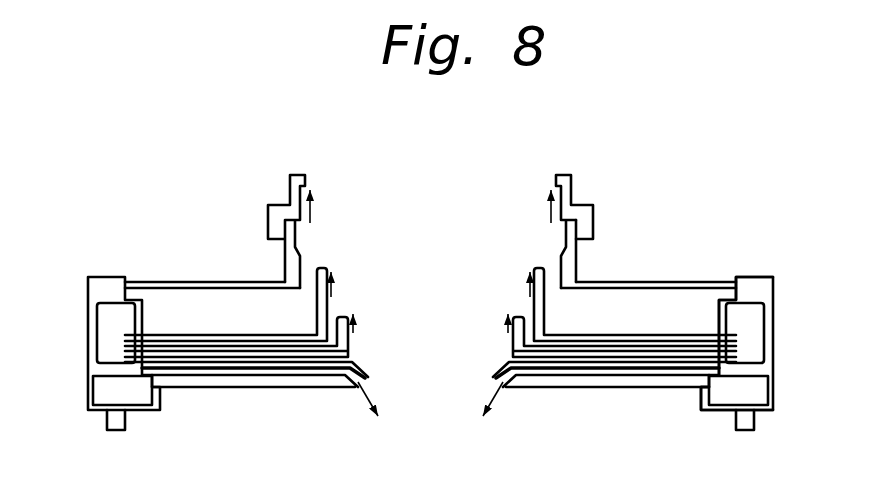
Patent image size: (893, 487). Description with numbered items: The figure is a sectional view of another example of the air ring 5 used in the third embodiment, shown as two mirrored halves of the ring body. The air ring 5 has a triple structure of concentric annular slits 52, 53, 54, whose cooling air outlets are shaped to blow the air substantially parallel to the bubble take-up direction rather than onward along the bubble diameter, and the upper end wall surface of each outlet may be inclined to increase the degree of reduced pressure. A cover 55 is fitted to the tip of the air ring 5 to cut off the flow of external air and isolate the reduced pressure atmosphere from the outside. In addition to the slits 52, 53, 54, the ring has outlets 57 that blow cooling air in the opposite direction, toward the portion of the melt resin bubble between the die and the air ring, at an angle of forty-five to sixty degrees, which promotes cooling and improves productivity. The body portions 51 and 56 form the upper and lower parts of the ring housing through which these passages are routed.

The air ring 5 is at (778, 351).
The header body 51 is at (750, 325).
The annular slit 52 is at (550, 272).
The annular slit 53 is at (532, 316).
The annular slit 54 is at (503, 338).
The cover 55 is at (588, 222).
The lower header block 56 is at (748, 395).
The outlet 57 is at (493, 393).